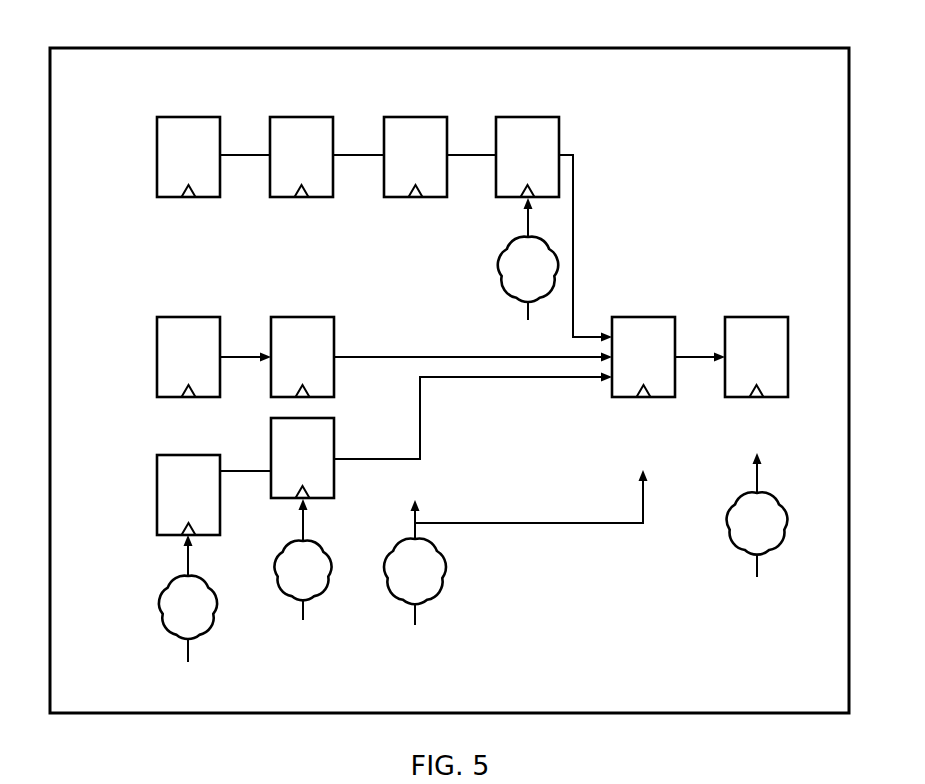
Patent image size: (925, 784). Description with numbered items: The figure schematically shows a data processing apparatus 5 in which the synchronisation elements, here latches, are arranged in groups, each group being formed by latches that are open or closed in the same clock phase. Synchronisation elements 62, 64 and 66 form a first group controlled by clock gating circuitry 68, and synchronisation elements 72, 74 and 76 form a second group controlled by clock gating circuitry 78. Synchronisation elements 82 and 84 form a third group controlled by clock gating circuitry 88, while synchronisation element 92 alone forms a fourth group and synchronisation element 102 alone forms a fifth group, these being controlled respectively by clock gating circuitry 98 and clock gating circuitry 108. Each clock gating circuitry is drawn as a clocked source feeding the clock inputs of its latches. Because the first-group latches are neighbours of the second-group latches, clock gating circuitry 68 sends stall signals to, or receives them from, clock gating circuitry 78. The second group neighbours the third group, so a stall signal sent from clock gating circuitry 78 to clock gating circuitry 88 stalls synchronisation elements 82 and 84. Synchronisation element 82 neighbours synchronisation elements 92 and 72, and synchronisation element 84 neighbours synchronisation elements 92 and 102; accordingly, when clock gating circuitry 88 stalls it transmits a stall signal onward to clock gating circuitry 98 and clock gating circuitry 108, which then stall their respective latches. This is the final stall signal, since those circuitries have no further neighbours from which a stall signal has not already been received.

The data processing apparatus 5 is at (811, 47).
The synchronisation element 62 is at (188, 117).
The synchronisation element 72 is at (301, 117).
The synchronisation element 82 is at (415, 117).
The synchronisation element 92 is at (528, 117).
The synchronisation element 64 is at (188, 317).
The synchronisation element 74 is at (303, 317).
The synchronisation element 84 is at (643, 317).
The synchronisation element 102 is at (757, 317).
The synchronisation element 66 is at (188, 455).
The synchronisation element 76 is at (334, 440).
The clock gating circuitry 98 is at (497, 272).
The clock gating circuitry 68 is at (161, 608).
The clock gating circuitry 78 is at (332, 568).
The clock gating circuitry 88 is at (447, 572).
The clock gating circuitry 108 is at (731, 546).